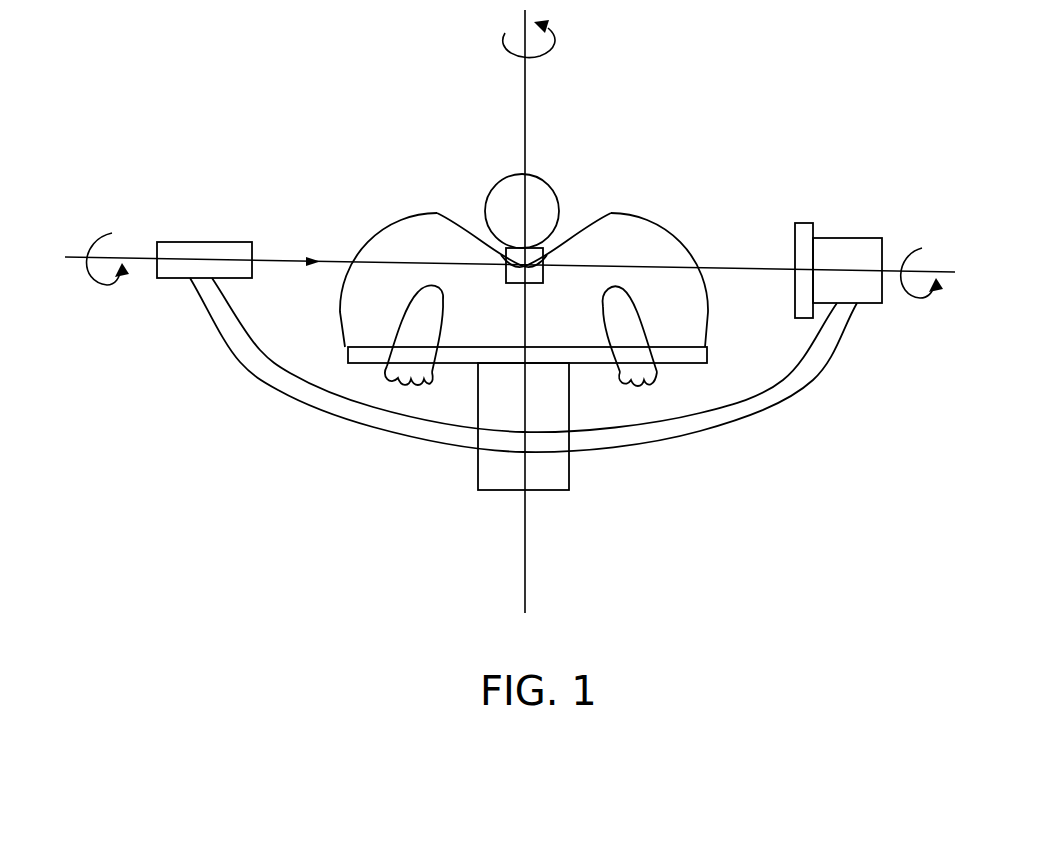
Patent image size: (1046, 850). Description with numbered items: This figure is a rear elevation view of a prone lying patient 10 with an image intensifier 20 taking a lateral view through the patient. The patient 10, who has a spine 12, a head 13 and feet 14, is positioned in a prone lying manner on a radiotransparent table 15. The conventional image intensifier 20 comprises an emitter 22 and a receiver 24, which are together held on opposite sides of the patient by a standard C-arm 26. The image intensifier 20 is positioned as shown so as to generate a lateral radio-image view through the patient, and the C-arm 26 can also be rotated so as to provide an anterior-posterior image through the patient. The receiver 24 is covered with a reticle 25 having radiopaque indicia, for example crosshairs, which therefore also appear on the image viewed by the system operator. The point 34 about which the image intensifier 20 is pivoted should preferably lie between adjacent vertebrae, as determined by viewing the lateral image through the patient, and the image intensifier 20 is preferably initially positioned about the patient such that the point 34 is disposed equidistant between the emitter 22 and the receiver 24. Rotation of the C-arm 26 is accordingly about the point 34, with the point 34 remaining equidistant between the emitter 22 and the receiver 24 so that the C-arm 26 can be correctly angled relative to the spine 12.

The patient 10 is at (401, 238).
The spine 12 is at (605, 218).
The head 13 is at (505, 196).
The feet 14 is at (418, 383).
The radiotransparent table 15 is at (550, 358).
The image intensifier 20 is at (178, 352).
The emitter 22 is at (207, 250).
The receiver 24 is at (848, 250).
The reticle 25 is at (792, 255).
The C-arm 26 is at (762, 407).
The point 34 is at (447, 213).